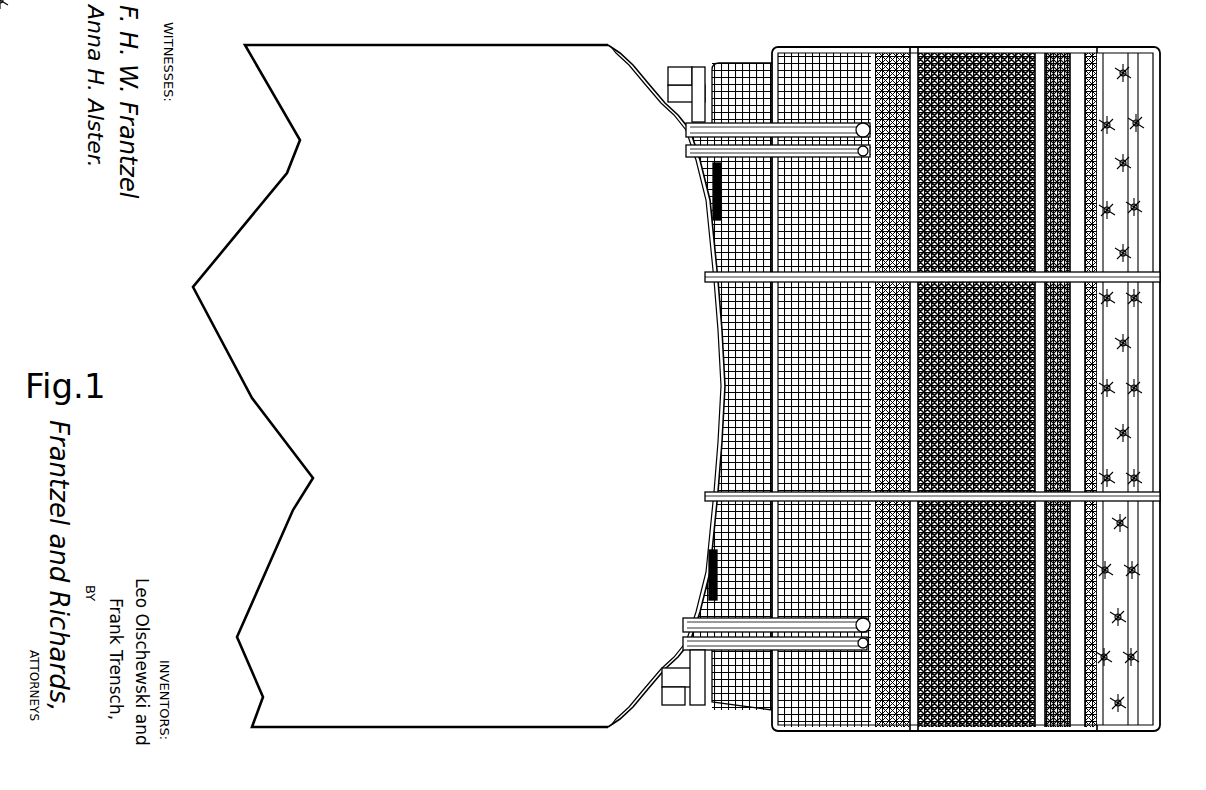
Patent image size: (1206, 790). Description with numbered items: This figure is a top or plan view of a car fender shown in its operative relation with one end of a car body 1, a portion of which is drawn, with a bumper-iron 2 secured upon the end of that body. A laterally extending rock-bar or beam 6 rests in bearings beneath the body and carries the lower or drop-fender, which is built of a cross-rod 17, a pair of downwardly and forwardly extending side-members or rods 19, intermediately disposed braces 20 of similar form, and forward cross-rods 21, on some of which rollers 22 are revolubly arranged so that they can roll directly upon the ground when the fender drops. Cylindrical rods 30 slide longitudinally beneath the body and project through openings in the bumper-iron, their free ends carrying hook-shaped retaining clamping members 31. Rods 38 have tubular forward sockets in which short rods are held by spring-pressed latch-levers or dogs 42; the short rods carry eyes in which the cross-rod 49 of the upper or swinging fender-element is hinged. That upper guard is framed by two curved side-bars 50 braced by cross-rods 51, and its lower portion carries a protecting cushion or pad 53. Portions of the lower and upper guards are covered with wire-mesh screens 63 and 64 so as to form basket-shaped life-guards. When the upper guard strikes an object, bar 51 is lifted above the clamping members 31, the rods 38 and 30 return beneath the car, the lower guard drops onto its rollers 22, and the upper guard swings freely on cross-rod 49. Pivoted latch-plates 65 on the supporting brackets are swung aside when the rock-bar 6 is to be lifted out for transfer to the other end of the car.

The body of a car 1 is at (296, 172).
The bumper-iron 2 is at (636, 68).
The rock-bar or beam 6 is at (678, 68).
The cross-rod of lower fender 17 is at (706, 66).
The side-members or rods 19 is at (752, 63).
The braces 20 is at (720, 282).
The cross-rods 21 is at (1140, 672).
The rollers 22 is at (1088, 90).
The cylindrical rods 30 is at (695, 135).
The retaining clamping members 31 is at (908, 50).
The rods 38 is at (700, 160).
The latch-lever or dog 42 is at (850, 150).
The cross-rod of upper fender 49 is at (958, 50).
The side-bars or rods 50 is at (805, 47).
The cross-rods or bars 51 is at (858, 50).
The protecting cushion or pad 53 is at (1130, 182).
The screen or wire-mesh 63 is at (750, 340).
The screen or wire-mesh 64 is at (1008, 50).
The latch-plates 65 is at (678, 93).